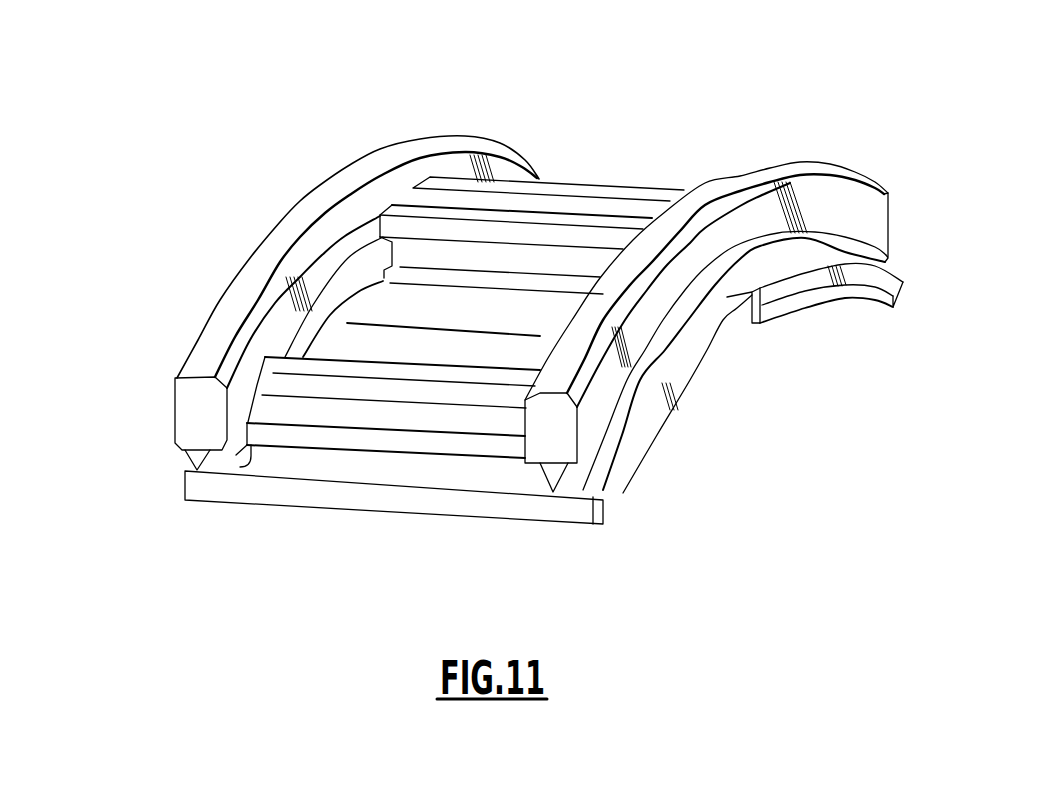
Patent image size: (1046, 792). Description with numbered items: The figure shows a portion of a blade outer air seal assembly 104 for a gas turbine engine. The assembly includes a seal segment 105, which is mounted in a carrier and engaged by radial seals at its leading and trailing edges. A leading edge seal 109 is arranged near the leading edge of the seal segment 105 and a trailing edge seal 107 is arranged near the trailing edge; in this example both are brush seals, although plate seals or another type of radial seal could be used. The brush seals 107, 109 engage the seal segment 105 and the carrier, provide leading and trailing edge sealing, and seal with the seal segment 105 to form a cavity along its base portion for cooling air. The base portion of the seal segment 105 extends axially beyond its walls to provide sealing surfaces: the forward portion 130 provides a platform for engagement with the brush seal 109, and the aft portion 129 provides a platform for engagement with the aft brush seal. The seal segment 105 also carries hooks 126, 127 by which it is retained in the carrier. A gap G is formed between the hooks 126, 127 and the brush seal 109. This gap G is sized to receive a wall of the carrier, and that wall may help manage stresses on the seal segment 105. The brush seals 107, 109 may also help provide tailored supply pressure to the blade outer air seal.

The BOAS assembly 104 is at (789, 86).
The seal segment 105 is at (583, 200).
The trailing edge seal 107 is at (593, 420).
The leading edge seal 109 is at (187, 400).
The hook 126 is at (320, 393).
The hook 127 is at (432, 233).
The aft portion 129 is at (587, 488).
The forward portion 130 is at (182, 468).
The gap G is at (232, 460).